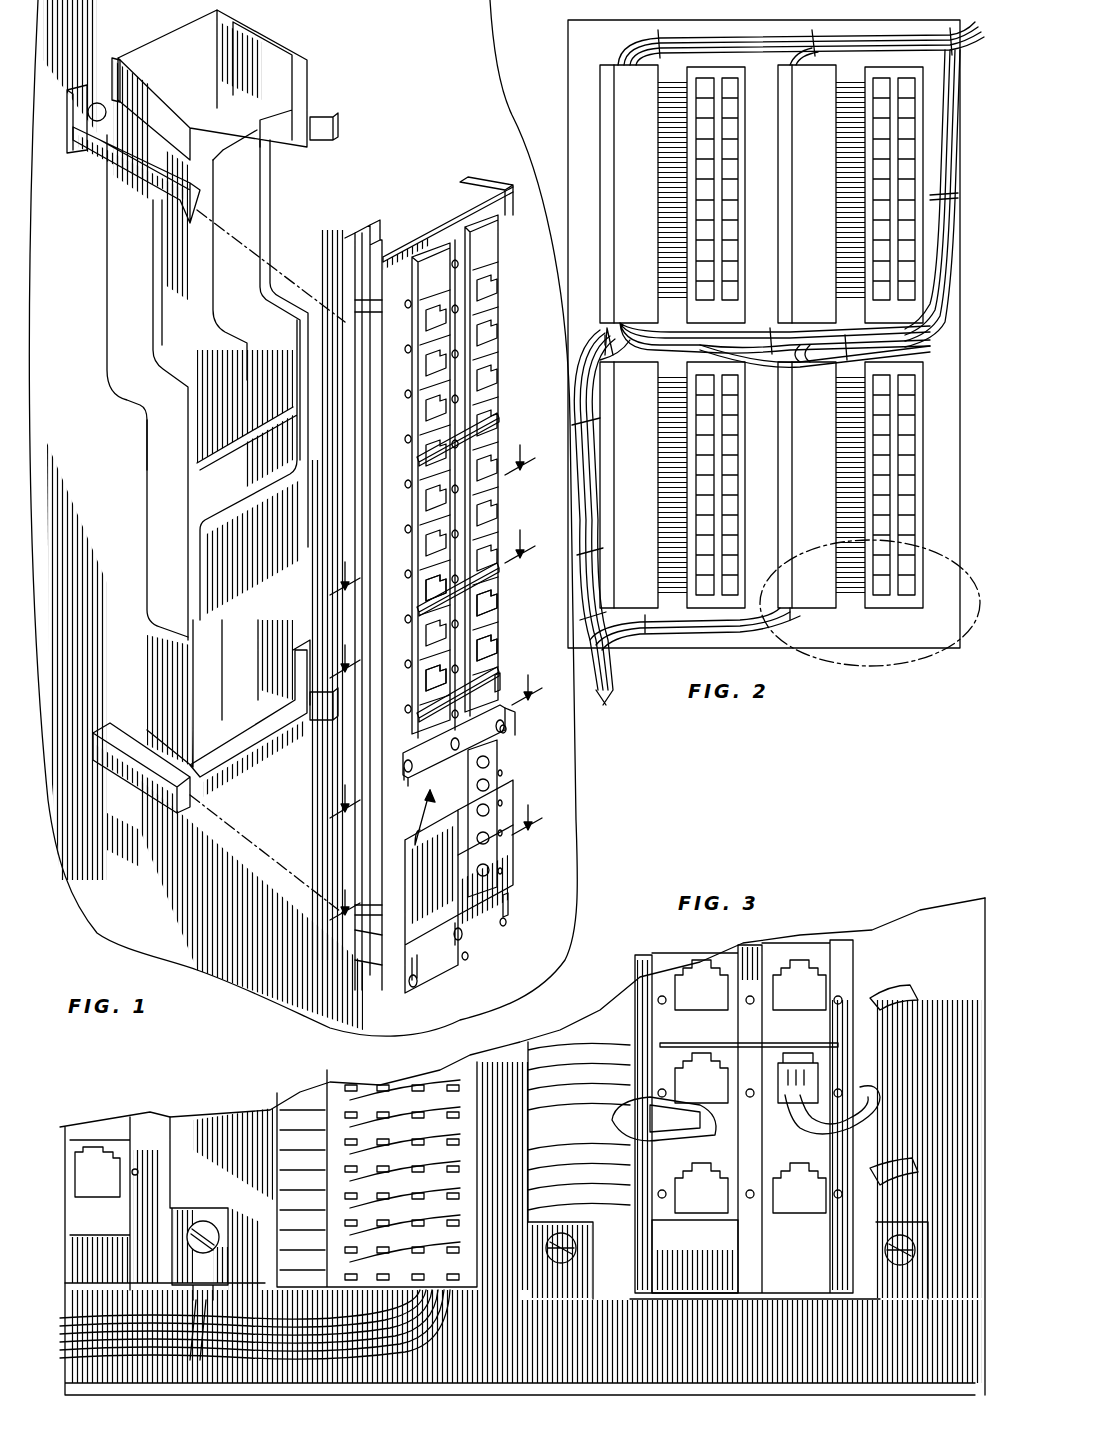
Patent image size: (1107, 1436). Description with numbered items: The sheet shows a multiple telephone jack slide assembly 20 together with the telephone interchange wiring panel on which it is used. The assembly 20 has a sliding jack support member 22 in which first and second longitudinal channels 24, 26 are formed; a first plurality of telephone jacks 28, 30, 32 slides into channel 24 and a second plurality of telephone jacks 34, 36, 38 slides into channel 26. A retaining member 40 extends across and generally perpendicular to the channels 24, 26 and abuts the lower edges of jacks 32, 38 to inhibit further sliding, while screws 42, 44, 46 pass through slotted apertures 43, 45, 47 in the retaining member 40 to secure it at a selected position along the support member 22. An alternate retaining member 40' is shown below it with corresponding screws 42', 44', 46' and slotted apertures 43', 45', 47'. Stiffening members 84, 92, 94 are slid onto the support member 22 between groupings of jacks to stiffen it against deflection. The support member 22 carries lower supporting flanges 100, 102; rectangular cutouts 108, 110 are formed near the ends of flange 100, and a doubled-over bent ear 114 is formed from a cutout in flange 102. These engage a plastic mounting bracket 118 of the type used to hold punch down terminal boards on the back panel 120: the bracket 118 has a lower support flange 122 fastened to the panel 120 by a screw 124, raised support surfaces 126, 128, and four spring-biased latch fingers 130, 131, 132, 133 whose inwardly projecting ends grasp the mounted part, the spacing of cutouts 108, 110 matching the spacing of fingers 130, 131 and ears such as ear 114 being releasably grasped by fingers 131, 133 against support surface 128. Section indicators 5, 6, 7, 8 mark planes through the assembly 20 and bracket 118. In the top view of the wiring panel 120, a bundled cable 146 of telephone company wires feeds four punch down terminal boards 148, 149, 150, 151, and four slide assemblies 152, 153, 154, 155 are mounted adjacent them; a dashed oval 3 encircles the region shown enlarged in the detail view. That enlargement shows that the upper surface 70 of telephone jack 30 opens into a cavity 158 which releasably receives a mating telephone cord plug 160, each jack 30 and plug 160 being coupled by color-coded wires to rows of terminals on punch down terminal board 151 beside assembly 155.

In FIG. 1, the multiple telephone jack slide assembly 20 is at (402, 185).
In FIG. 1, the sliding jack support member 22 is at (430, 230).
In FIG. 1, the first longitudinal channel 24 is at (415, 835).
In FIG. 1, the second longitudinal channel 26 is at (478, 795).
In FIG. 1, the telephone jack 28 is at (420, 490).
In FIG. 1, the telephone jack 30 is at (420, 620).
In FIG. 3, the telephone jack 30 is at (672, 1217).
In FIG. 1, the telephone jack 32 is at (420, 690).
In FIG. 1, the telephone jack 34 is at (500, 470).
In FIG. 1, the telephone jack 36 is at (495, 605).
In FIG. 1, the telephone jack 38 is at (495, 650).
In FIG. 1, the retaining member 40 is at (538, 721).
In FIG. 1, the alternate retaining member 40' is at (509, 854).
In FIG. 1, the screw 42 is at (448, 768).
In FIG. 1, the screw 42' is at (419, 1000).
In FIG. 1, the slotted aperture 43 is at (397, 751).
In FIG. 1, the slotted aperture 43' is at (427, 943).
In FIG. 1, the screw 44 is at (526, 744).
In FIG. 1, the screw 44' is at (480, 974).
In FIG. 1, the slotted aperture 45 is at (442, 748).
In FIG. 1, the slotted aperture 45' is at (443, 940).
In FIG. 1, the screw 46 is at (528, 737).
In FIG. 1, the screw 46' is at (532, 929).
In FIG. 1, the slotted aperture 47 is at (520, 655).
In FIG. 1, the slotted aperture 47' is at (533, 903).
In FIG. 3, the upper surface 70 is at (700, 1225).
In FIG. 1, the stiffening member 84 is at (420, 438).
In FIG. 1, the stiffening member 92 is at (420, 598).
In FIG. 1, the stiffening member 94 is at (490, 730).
In FIG. 1, the lower supporting flange 100 is at (355, 240).
In FIG. 1, the lower supporting flange 102 is at (495, 178).
In FIG. 1, the rectangular cutout 108 is at (350, 322).
In FIG. 1, the rectangular cutout 110 is at (368, 885).
In FIG. 1, the bent ear 114 is at (372, 940).
In FIG. 1, the plastic mounting bracket 118 is at (125, 452).
In FIG. 1, the back panel 120 is at (98, 342).
In FIG. 2, the back panel 120 is at (866, 642).
In FIG. 3, the back panel 120 is at (706, 1347).
In FIG. 1, the lower support flange 122 is at (110, 60).
In FIG. 1, the screw 124 is at (95, 130).
In FIG. 1, the raised support surface 126 is at (300, 82).
In FIG. 1, the raised support surface 128 is at (278, 775).
In FIG. 1, the spring-biased latch finger 130 is at (195, 215).
In FIG. 1, the spring-biased latch finger 131 is at (140, 785).
In FIG. 1, the spring-biased latch finger 132 is at (312, 140).
In FIG. 1, the spring-biased latch finger 133 is at (320, 720).
In FIG. 2, the bundled cable 146 is at (608, 664).
In FIG. 2, the punch down terminal board 148 is at (615, 78).
In FIG. 2, the punch down terminal board 149 is at (812, 90).
In FIG. 2, the punch down terminal board 150 is at (618, 330).
In FIG. 2, the punch down terminal board 151 is at (820, 372).
In FIG. 3, the punch down terminal board 151 is at (455, 1292).
In FIG. 2, the multiple telephone jack slide assembly 152 is at (750, 86).
In FIG. 2, the multiple telephone jack slide assembly 153 is at (925, 80).
In FIG. 2, the multiple telephone jack slide assembly 154 is at (720, 612).
In FIG. 3, the multiple telephone jack slide assembly 154 is at (185, 1138).
In FIG. 2, the multiple telephone jack slide assembly 155 is at (905, 600).
In FIG. 3, the multiple telephone jack slide assembly 155 is at (770, 1300).
In FIG. 3, the cavity 158 is at (722, 1194).
In FIG. 3, the mating telephone cord plug 160 is at (720, 1123).
In FIG. 2, the dashed oval 3 is at (900, 665).
In FIG. 1, the section line 5- 5 is at (432, 504).
In FIG. 1, the section line 6- 6 is at (432, 589).
In FIG. 1, the section line 7- 7 is at (436, 734).
In FIG. 1, the section line 8- 8 is at (436, 850).